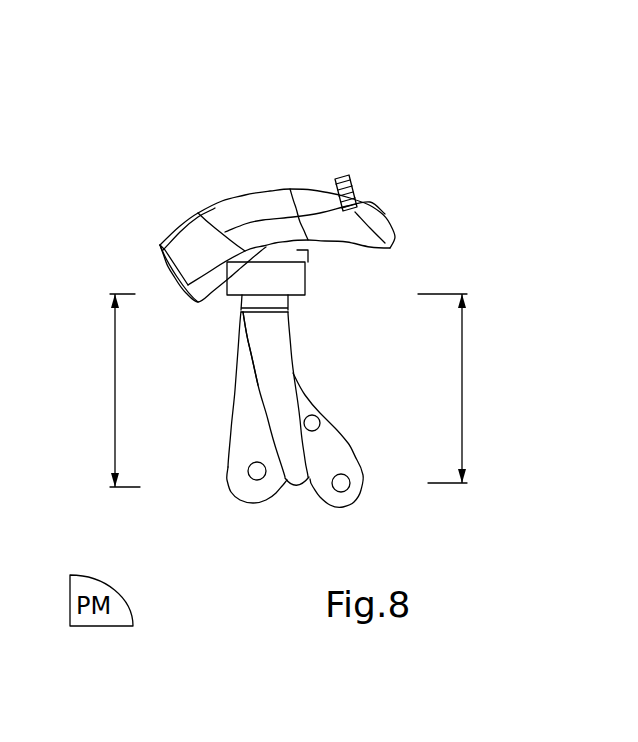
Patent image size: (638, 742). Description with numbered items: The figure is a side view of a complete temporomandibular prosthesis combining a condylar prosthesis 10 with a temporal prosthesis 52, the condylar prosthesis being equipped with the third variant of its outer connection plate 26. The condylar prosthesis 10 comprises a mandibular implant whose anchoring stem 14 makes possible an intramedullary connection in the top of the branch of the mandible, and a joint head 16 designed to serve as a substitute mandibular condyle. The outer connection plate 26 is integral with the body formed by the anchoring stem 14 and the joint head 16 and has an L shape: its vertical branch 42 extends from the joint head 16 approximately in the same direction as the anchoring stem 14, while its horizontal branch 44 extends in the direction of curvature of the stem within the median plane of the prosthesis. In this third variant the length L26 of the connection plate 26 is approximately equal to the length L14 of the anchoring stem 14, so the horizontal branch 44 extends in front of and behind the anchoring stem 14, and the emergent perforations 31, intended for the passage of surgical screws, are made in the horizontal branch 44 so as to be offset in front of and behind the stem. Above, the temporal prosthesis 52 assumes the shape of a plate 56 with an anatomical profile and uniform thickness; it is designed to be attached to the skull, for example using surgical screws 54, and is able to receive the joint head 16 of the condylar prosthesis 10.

The condylar prosthesis 10 is at (226, 507).
The anchoring stem 14 is at (260, 425).
The joint head 16 is at (297, 248).
The outer connection plate 26 is at (321, 384).
The emergent perforations 31 is at (313, 423).
The vertical branch 42 is at (245, 385).
The horizontal branch 44 is at (233, 467).
The temporal prosthesis 52 is at (247, 188).
The surgical screws 54 is at (348, 182).
The plate 56 is at (192, 227).
The length of the anchoring stem L14 is at (100, 390).
The length of the connection plate L26 is at (467, 388).